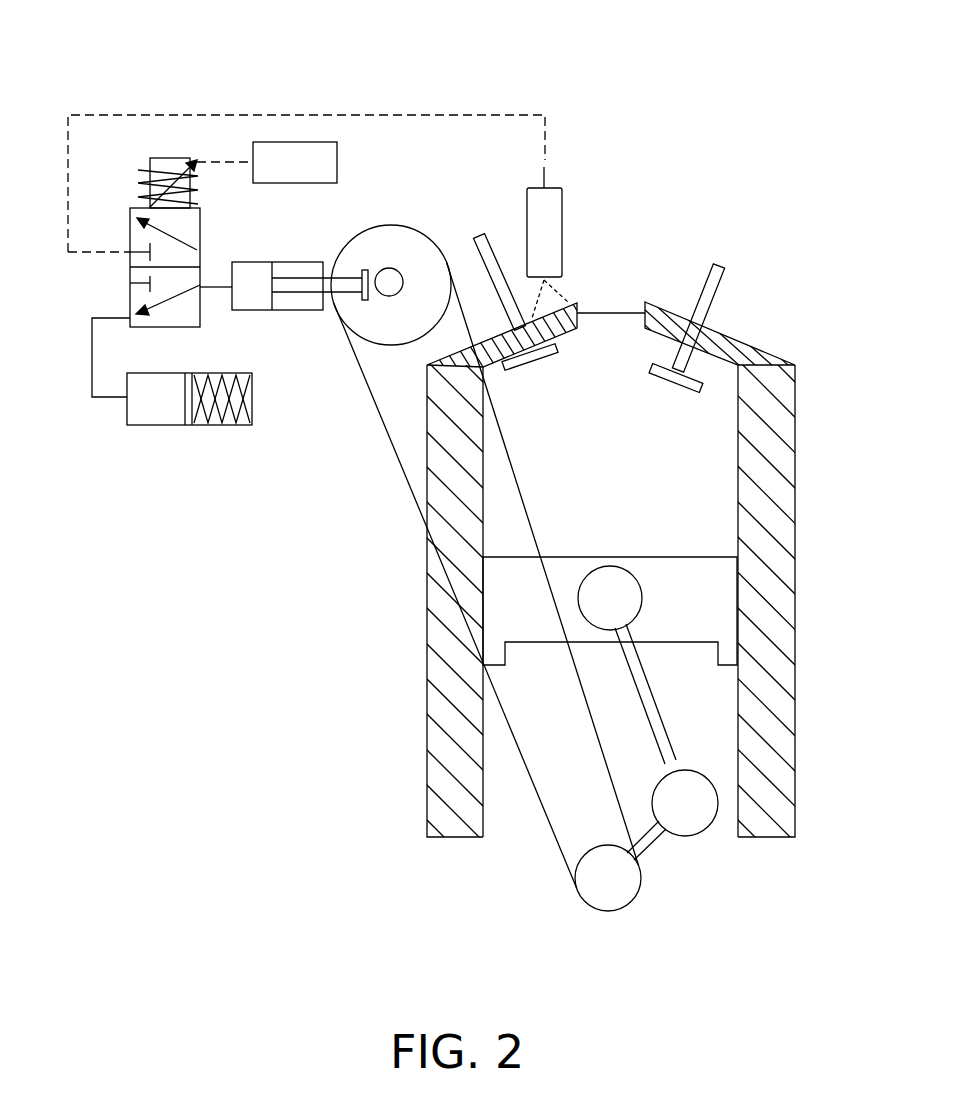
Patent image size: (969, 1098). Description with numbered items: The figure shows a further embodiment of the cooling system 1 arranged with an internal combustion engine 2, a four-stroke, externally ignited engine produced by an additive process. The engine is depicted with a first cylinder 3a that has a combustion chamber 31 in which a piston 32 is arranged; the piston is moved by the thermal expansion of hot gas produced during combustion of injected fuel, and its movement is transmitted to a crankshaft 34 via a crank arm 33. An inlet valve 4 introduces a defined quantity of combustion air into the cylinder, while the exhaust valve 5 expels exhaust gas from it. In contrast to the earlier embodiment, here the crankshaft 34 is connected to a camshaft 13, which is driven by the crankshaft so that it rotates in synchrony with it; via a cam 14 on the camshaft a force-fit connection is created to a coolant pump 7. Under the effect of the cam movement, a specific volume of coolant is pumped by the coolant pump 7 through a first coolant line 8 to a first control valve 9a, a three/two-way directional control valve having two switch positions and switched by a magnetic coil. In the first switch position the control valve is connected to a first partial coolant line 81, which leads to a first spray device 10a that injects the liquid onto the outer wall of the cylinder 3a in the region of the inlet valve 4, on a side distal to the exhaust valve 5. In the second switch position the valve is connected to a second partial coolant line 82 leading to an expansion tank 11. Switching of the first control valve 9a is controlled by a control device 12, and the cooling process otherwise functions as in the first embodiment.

The cooling system 1 is at (770, 894).
The internal combustion engine 2 is at (845, 603).
The first cylinder 3a is at (797, 422).
The inlet valve 4 is at (493, 233).
The exhaust valve 5 is at (725, 282).
The coolant pump 7 is at (300, 311).
The first coolant line 8 is at (208, 290).
The first control valve 9a is at (173, 157).
The first spray device 10a is at (548, 218).
The expansion tank 11 is at (162, 428).
The control device 12 is at (285, 150).
The camshaft 13 is at (412, 247).
The cam 14 is at (384, 266).
The combustion chamber 31 is at (720, 493).
The piston 32 is at (712, 597).
The crank arm 33 is at (672, 742).
The crankshaft 34 is at (630, 885).
The first partial coolant line 81 is at (100, 115).
The second partial coolant line 82 is at (88, 372).